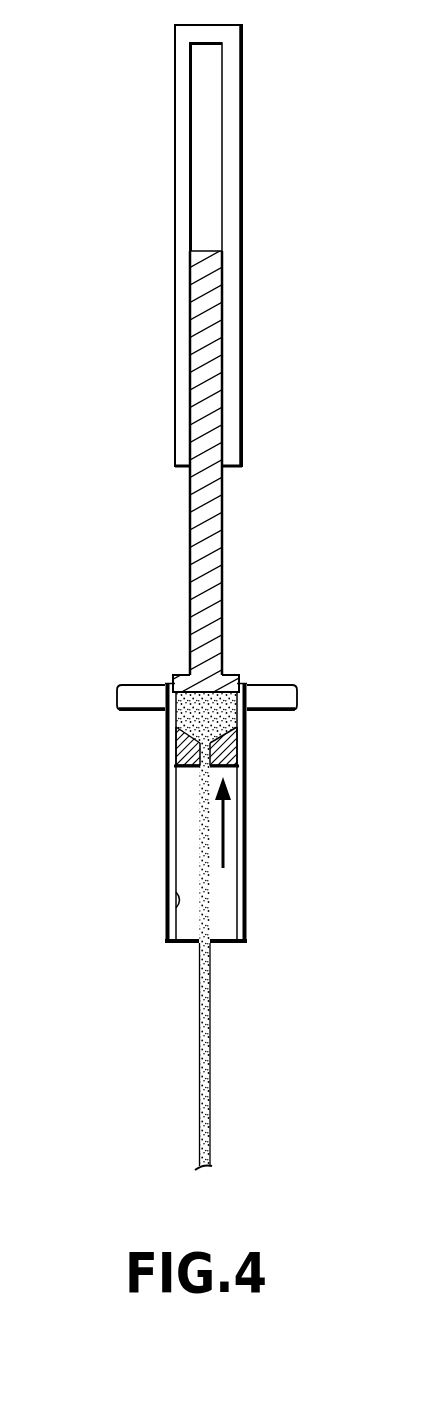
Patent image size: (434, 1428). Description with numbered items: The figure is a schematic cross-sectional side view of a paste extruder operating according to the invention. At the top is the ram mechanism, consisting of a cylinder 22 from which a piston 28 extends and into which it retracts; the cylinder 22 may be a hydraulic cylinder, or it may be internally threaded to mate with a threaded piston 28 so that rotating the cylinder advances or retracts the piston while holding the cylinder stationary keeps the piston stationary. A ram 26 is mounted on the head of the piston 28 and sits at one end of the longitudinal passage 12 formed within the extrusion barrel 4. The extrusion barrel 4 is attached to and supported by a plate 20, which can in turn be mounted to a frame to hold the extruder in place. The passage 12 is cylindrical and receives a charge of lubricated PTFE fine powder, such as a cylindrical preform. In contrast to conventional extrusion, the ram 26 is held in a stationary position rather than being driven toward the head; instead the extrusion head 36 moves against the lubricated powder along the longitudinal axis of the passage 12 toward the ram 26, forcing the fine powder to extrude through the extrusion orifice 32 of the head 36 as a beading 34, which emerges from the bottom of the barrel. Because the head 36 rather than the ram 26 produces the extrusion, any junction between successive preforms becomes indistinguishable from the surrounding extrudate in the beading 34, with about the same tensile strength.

The cylinder 22 is at (243, 134).
The piston 28 is at (222, 602).
The ram 26 is at (182, 674).
The plate 20 is at (137, 710).
The extrusion barrel 4 is at (163, 812).
The longitudinal passage 12 is at (175, 907).
The extrusion head 36 is at (230, 740).
The extrusion orifice 32 is at (207, 744).
The beading 34 is at (212, 965).